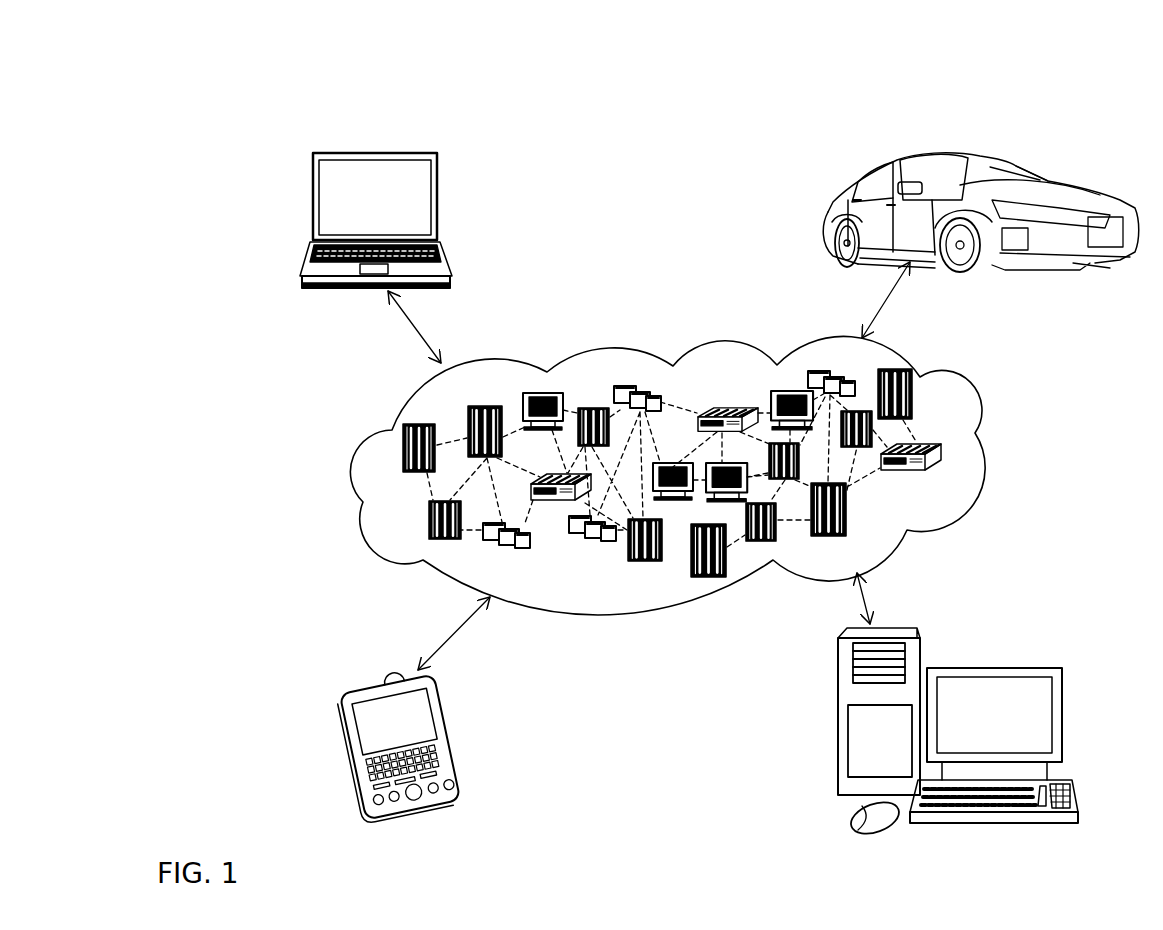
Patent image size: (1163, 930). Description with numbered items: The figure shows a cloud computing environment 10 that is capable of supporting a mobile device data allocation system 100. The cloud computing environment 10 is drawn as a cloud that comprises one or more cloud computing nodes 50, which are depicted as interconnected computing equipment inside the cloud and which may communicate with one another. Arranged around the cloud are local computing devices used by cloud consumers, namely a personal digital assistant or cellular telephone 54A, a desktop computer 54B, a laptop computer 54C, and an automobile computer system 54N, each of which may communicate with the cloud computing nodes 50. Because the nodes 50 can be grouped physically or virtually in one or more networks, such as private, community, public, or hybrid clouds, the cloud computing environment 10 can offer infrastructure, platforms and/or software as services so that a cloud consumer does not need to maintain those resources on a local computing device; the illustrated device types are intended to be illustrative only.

The mobile device data allocation system 100 is at (630, 118).
The cloud computing environment 10 is at (990, 455).
The cloud computing nodes 50 is at (946, 479).
The personal digital assistant or cellular telephone 54A is at (452, 737).
The desktop computer 54B is at (992, 668).
The laptop computer 54C is at (437, 203).
The automobile computer system 54N is at (826, 216).